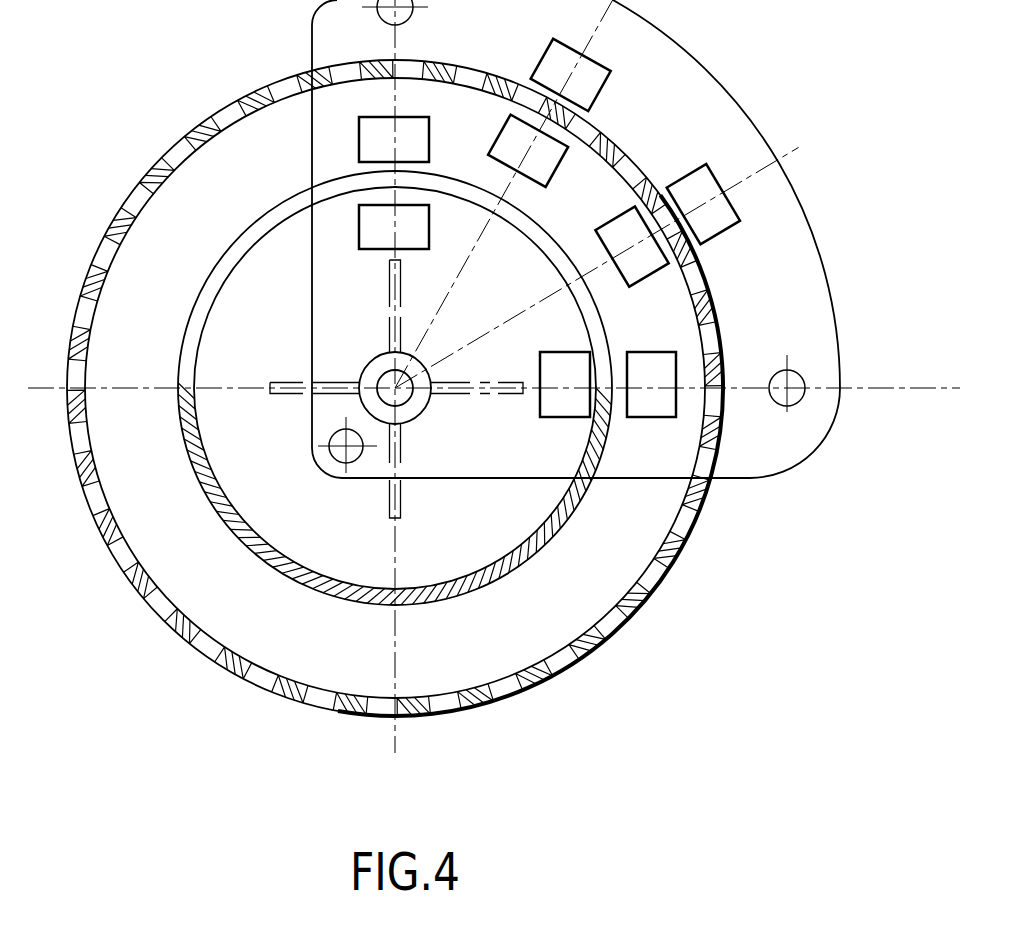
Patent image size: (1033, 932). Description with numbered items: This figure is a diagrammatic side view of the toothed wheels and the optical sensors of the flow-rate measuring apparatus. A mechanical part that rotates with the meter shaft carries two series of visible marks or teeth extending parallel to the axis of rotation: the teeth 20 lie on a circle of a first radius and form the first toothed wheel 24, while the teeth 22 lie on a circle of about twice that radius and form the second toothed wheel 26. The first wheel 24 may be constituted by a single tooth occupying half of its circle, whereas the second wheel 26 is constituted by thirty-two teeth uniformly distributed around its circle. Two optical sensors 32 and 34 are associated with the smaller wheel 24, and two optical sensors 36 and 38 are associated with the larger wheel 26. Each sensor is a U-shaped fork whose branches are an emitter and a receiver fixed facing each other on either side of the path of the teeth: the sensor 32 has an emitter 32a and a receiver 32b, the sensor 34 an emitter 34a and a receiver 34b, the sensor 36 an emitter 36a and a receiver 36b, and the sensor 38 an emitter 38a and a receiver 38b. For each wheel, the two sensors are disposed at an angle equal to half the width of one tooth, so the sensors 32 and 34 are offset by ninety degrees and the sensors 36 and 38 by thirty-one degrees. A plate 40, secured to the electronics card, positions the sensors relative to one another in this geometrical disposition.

The marks or teeth 20 is at (520, 565).
The marks or teeth 22 is at (713, 493).
The first toothed wheel 24 is at (434, 628).
The second toothed wheel 26 is at (569, 699).
The optical sensor 32 is at (645, 388).
The emitter 32a is at (553, 416).
The receiver 32b is at (633, 416).
The optical sensor 34 is at (373, 159).
The emitter 34a is at (367, 250).
The receiver 34b is at (358, 146).
The optical sensor 36 is at (716, 246).
The emitter 36a is at (653, 271).
The receiver 36b is at (735, 226).
The optical sensor 38 is at (596, 109).
The emitter 38a is at (540, 163).
The receiver 38b is at (596, 88).
The plate 40 is at (823, 417).